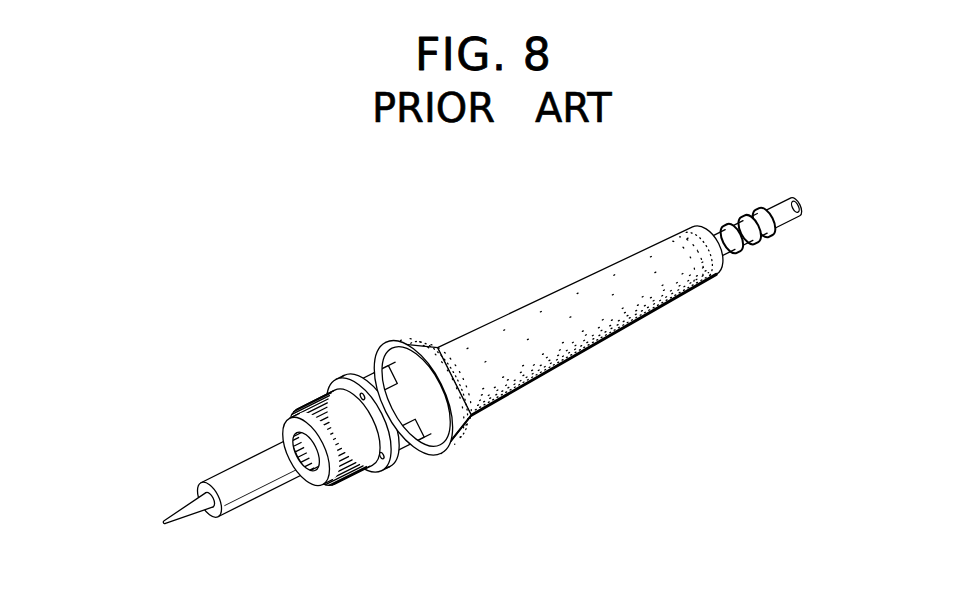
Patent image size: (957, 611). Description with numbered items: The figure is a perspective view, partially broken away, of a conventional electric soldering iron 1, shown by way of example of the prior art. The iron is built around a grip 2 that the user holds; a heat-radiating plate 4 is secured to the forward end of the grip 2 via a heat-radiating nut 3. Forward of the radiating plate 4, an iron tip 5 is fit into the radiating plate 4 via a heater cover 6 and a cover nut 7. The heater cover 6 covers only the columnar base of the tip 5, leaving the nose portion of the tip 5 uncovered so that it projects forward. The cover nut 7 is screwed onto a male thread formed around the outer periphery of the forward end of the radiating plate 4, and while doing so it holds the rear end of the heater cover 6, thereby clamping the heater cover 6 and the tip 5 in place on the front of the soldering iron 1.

The electric soldering iron 1 is at (478, 379).
The grip 2 is at (567, 300).
The heat-radiating nut 3 is at (394, 373).
The heat-radiating plate 4 is at (397, 428).
The iron tip 5 is at (190, 505).
The heater cover 6 is at (268, 480).
The cover nut 7 is at (320, 405).